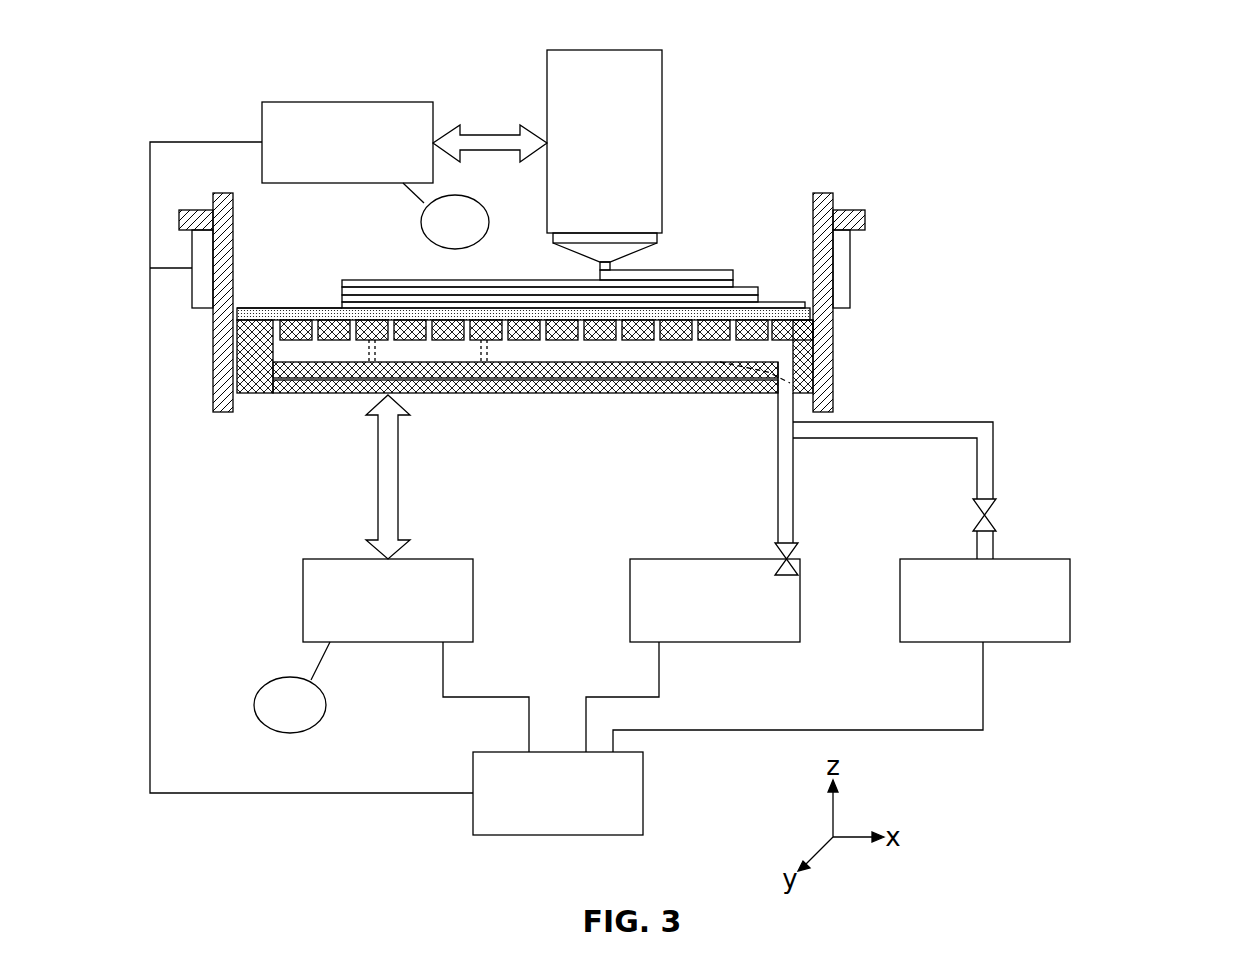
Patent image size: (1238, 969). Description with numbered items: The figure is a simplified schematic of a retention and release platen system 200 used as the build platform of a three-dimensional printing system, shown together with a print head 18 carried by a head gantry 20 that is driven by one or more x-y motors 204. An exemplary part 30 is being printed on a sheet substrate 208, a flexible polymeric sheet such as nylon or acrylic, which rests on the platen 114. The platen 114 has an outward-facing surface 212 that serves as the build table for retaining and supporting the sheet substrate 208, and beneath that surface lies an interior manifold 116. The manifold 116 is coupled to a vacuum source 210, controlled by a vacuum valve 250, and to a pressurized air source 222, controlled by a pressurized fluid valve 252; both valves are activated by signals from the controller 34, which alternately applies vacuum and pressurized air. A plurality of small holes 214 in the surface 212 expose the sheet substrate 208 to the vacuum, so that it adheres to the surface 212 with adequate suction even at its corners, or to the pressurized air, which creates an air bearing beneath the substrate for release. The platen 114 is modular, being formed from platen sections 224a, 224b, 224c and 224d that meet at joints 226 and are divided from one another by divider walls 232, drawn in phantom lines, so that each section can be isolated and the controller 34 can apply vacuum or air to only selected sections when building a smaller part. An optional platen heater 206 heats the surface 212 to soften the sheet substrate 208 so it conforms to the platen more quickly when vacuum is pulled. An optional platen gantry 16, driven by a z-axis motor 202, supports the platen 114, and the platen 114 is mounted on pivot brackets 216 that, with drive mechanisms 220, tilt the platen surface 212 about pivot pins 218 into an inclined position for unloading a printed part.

The print head 18 is at (612, 50).
The head gantry 20 is at (310, 101).
The x-y motors 204 is at (452, 197).
The part 30 is at (702, 266).
The sheet substrate 208 is at (282, 307).
The outward-facing surface 212 is at (238, 312).
The joints 226 is at (378, 316).
The interior manifold 116 is at (322, 394).
The platen heater 206 is at (318, 394).
The holes 214 is at (485, 395).
The platen section 224a is at (260, 395).
The platen section 224b is at (422, 396).
The platen section 224c is at (620, 394).
The platen section 224d is at (717, 394).
The platen 114 is at (497, 396).
The divider walls 232 is at (340, 395).
The pivot pins 218 is at (180, 214).
The drive mechanisms 220 is at (193, 284).
The pivot brackets 216 is at (212, 368).
The retention and release platen system 200 is at (953, 350).
The vacuum valve 250 is at (776, 548).
The pressurized fluid valve 252 is at (998, 516).
The platen gantry 16 is at (303, 600).
The z-axis motor 202 is at (290, 734).
The vacuum source 210 is at (735, 644).
The pressurized air source 222 is at (1072, 600).
The controller 34 is at (520, 836).